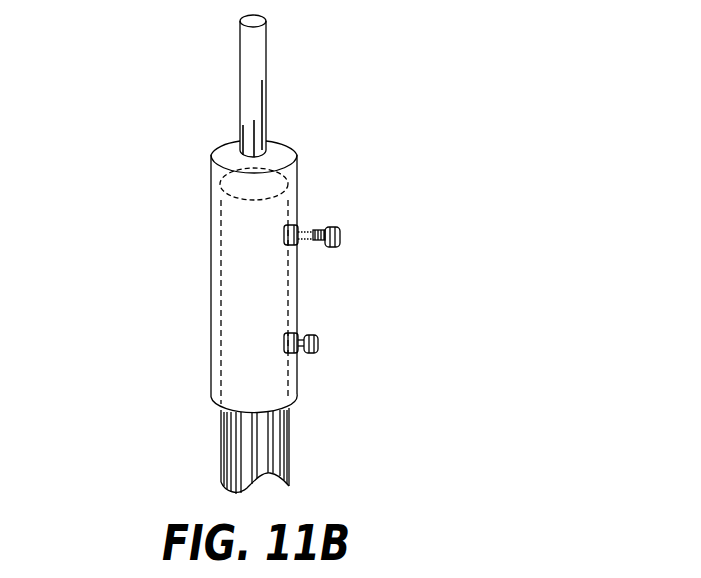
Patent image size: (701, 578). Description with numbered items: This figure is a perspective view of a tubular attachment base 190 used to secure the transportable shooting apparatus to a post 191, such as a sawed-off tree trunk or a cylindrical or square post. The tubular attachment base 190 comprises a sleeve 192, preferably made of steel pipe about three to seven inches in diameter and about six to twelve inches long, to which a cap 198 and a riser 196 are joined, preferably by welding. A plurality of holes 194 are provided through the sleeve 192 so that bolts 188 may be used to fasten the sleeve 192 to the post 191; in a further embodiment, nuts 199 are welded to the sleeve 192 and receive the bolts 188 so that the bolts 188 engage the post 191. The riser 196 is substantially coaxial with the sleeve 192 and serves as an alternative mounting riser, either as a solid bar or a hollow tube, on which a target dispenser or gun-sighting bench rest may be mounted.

The tubular attachment base 190 is at (170, 94).
The post 191 is at (290, 443).
The sleeve 192 is at (210, 187).
The holes 194 is at (298, 232).
The riser 196 is at (262, 58).
The cap 198 is at (283, 153).
The bolts 188 is at (343, 234).
The nuts 199 is at (298, 342).